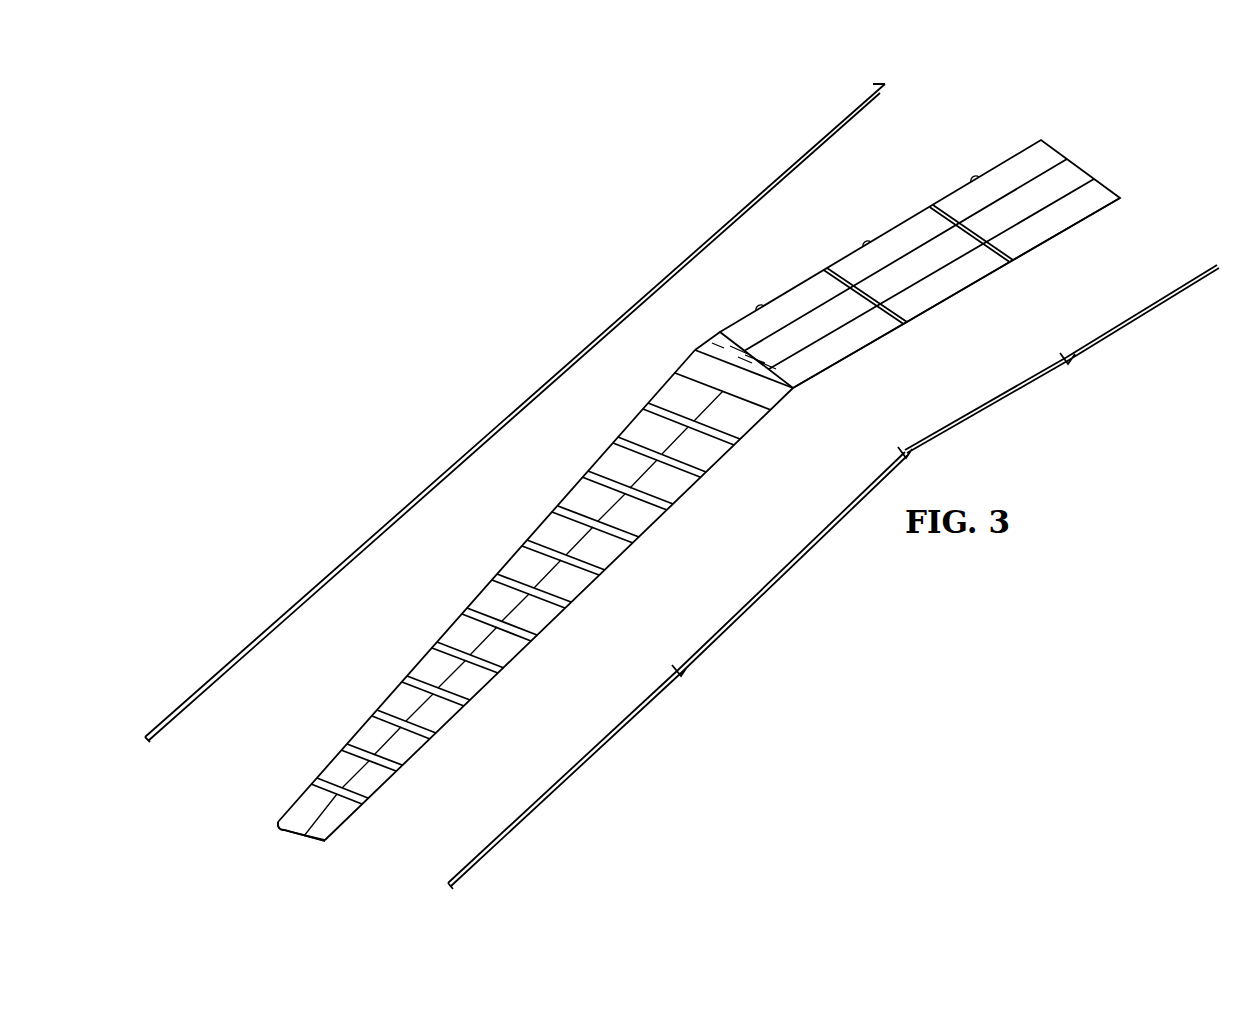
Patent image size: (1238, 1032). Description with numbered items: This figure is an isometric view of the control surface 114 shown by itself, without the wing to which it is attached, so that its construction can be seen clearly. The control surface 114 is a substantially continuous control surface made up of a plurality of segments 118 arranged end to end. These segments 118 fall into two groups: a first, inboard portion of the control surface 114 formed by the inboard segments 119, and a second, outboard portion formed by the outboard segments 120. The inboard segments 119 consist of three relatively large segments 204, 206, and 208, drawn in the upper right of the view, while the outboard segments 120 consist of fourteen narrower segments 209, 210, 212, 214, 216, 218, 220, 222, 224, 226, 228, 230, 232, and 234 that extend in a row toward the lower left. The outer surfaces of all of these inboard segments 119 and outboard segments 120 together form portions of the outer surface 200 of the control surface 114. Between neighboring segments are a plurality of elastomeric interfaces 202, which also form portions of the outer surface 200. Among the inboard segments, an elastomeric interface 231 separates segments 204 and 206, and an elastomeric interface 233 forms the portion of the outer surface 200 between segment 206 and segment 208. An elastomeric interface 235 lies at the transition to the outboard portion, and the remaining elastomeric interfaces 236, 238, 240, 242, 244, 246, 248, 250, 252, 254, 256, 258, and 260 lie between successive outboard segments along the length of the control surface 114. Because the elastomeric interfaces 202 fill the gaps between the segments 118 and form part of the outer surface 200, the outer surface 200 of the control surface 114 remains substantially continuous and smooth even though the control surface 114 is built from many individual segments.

The control surface 114 is at (1101, 150).
The segments 118 is at (516, 408).
The inboard segments 119 is at (1058, 361).
The outboard segments 120 is at (678, 670).
The outer surface 200 is at (1025, 167).
The elastomeric interfaces 202 is at (371, 799).
The segment 204 is at (1060, 228).
The segment 206 is at (947, 293).
The segment 208 is at (845, 353).
The segment 209 is at (772, 401).
The segment 210 is at (733, 438).
The segment 212 is at (699, 471).
The segment 214 is at (666, 503).
The segment 216 is at (632, 536).
The segment 218 is at (598, 569).
The segment 220 is at (564, 601).
The segment 222 is at (530, 634).
The segment 224 is at (497, 667).
The segment 226 is at (463, 699).
The segment 228 is at (429, 732).
The segment 230 is at (395, 764).
The segment 232 is at (361, 797).
The segment 234 is at (329, 831).
The elastomeric interface 235 is at (714, 335).
The elastomeric interface 236 is at (681, 366).
The elastomeric interface 238 is at (647, 401).
The elastomeric interface 240 is at (617, 435).
The elastomeric interface 242 is at (587, 469).
The elastomeric interface 244 is at (557, 504).
The elastomeric interface 246 is at (526, 538).
The elastomeric interface 248 is at (496, 572).
The elastomeric interface 250 is at (466, 606).
The elastomeric interface 252 is at (436, 640).
The elastomeric interface 254 is at (406, 674).
The elastomeric interface 256 is at (376, 708).
The elastomeric interface 258 is at (346, 742).
The elastomeric interface 260 is at (316, 776).
The elastomeric interface 231 is at (933, 203).
The elastomeric interface 233 is at (826, 267).